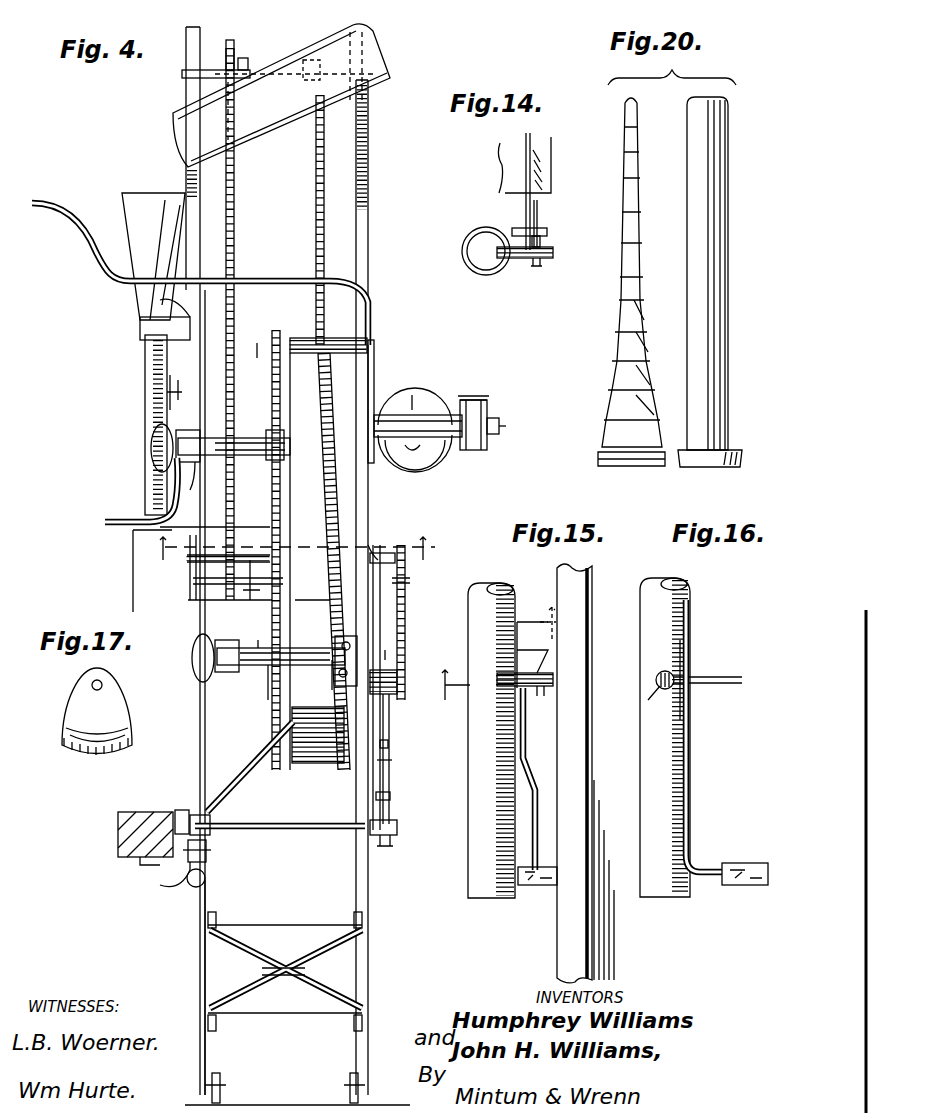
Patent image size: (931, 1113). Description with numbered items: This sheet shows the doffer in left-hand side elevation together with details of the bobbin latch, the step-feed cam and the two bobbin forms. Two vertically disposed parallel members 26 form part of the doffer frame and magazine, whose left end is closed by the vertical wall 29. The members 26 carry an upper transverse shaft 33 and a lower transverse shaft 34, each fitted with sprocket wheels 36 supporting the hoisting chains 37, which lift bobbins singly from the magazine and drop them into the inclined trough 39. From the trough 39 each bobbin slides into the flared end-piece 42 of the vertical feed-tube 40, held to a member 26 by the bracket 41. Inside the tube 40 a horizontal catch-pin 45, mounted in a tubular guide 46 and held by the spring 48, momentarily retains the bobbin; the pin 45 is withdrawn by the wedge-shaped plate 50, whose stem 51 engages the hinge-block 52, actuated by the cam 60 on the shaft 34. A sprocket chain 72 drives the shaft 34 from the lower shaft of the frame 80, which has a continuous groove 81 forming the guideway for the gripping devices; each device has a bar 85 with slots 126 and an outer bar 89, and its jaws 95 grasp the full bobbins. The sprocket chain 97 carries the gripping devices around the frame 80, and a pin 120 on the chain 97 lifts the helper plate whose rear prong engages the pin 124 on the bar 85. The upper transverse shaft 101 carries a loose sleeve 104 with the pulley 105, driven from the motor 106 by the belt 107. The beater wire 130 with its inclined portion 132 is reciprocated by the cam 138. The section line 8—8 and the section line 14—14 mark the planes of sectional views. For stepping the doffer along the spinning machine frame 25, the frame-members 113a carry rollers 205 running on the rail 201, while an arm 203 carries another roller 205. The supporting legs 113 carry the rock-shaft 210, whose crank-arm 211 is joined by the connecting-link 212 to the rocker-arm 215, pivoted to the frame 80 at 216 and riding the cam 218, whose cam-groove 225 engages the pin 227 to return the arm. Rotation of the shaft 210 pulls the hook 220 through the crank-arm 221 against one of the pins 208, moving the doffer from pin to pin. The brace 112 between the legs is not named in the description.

In FIG. 4, the section line 8— 8 is at (290, 550).
In FIG. 4, the section line 14— 14 is at (447, 685).
In FIG. 15, the section line 14— 14 is at (577, 773).
In FIG. 4, the spinning machine frame 25 is at (117, 838).
In FIG. 4, the vertically disposed parallel members 26 is at (186, 92).
In FIG. 4, the vertical wall 29 is at (253, 340).
In FIG. 4, the transverse shaft 33 is at (222, 70).
In FIG. 4, the transverse shaft 34 is at (256, 600).
In FIG. 4, the sprocket wheels 36 is at (246, 60).
In FIG. 4, the hoisting chains 37 is at (312, 182).
In FIG. 4, the inclined trough 39 is at (281, 95).
In FIG. 4, the feed-tube 40 is at (148, 371).
In FIG. 14, the feed-tube 40 is at (462, 253).
In FIG. 15, the feed-tube 40 is at (470, 871).
In FIG. 16, the feed-tube 40 is at (650, 801).
In FIG. 4, the bracket 41 is at (145, 327).
In FIG. 4, the flared or funnel-shaped end-piece 42 is at (135, 228).
In FIG. 4, the catch-pin 45 is at (417, 645).
In FIG. 14, the catch-pin 45 is at (491, 272).
In FIG. 15, the catch-pin 45 is at (497, 680).
In FIG. 16, the catch-pin 45 is at (656, 683).
In FIG. 14, the tubular guide 46 is at (538, 266).
In FIG. 15, the tubular guide 46 is at (541, 696).
In FIG. 16, the tubular guide 46 is at (648, 700).
In FIG. 14, the spring 48 is at (526, 204).
In FIG. 16, the spring 48 is at (733, 677).
In FIG. 4, the wedge-shaped plate 50 is at (172, 395).
In FIG. 14, the wedge-shaped plate 50 is at (546, 231).
In FIG. 15, the wedge-shaped plate 50 is at (530, 655).
In FIG. 16, the wedge-shaped plate 50 is at (684, 648).
In FIG. 14, the stem 51 is at (540, 210).
In FIG. 15, the stem 51 is at (528, 762).
In FIG. 16, the stem 51 is at (685, 835).
In FIG. 4, the hinge-block 52 is at (128, 494).
In FIG. 14, the hinge-block 52 is at (550, 165).
In FIG. 15, the hinge-block 52 is at (540, 886).
In FIG. 16, the hinge-block 52 is at (750, 863).
In FIG. 4, the cam 60 is at (190, 603).
In FIG. 4, the sprocket chain 72 is at (405, 610).
In FIG. 4, the frame 80 is at (300, 352).
In FIG. 4, the continuous groove 81 is at (330, 495).
In FIG. 4, the bar 85 is at (252, 440).
In FIG. 4, the outer bar 89 is at (312, 648).
In FIG. 4, the jaws 95 is at (152, 451).
In FIG. 4, the sprocket chain 97 is at (272, 391).
In FIG. 4, the transverse shaft 101 is at (511, 427).
In FIG. 4, the loose sleeve 104 is at (400, 437).
In FIG. 4, the pulley 105 is at (480, 402).
In FIG. 4, the motor 106 is at (408, 392).
In FIG. 4, the belt 107 is at (474, 450).
In FIG. 4, the cross brace 112 is at (286, 969).
In FIG. 4, the supporting legs 113 is at (368, 895).
In FIG. 4, the frame-members 113a is at (204, 956).
In FIG. 4, the pin 120 is at (270, 695).
In FIG. 4, the pin 124 is at (340, 680).
In FIG. 4, the slots 126 is at (252, 455).
In FIG. 4, the wire 130 is at (258, 527).
In FIG. 4, the inclined portion 132 is at (133, 573).
In FIG. 4, the cam 138 is at (292, 620).
In FIG. 4, the rail 201 is at (205, 879).
In FIG. 4, the arm 203 is at (50, 200).
In FIG. 4, the roller 205 is at (206, 851).
In FIG. 4, the pins 208 is at (159, 886).
In FIG. 4, the rock-shaft 210 is at (288, 822).
In FIG. 4, the crank-arm 211 is at (397, 824).
In FIG. 4, the connecting-link 212 is at (392, 797).
In FIG. 4, the rocker-arm 215 is at (396, 777).
In FIG. 4, the pivot 216 is at (388, 556).
In FIG. 4, the cam 218 is at (397, 735).
In FIG. 17, the cam 218 is at (70, 700).
In FIG. 4, the hook 220 is at (178, 812).
In FIG. 4, the crank-arm 221 is at (200, 812).
In FIG. 4, the cam-groove 225 is at (390, 745).
In FIG. 17, the cam-groove 225 is at (134, 737).
In FIG. 4, the pin 227 is at (385, 648).